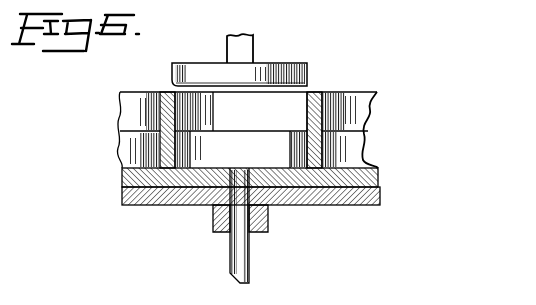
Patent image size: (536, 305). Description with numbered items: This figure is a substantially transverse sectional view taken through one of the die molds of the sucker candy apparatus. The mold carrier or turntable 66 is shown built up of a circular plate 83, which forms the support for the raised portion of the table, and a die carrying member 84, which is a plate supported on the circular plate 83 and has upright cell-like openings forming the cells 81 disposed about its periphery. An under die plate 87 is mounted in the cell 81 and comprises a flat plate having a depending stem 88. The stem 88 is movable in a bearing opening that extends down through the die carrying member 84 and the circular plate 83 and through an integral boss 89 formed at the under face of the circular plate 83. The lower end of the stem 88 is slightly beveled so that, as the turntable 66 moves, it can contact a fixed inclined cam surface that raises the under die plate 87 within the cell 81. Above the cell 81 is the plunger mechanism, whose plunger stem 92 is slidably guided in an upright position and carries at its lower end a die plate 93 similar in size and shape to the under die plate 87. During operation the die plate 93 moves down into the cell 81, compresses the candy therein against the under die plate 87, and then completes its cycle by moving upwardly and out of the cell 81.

The turntable 66 is at (119, 170).
The cell 81 is at (293, 102).
The circular plate 83 is at (381, 194).
The die carrying member 84 is at (377, 170).
The under die plate 87 is at (250, 139).
The stem 88 is at (243, 211).
The boss 89 is at (213, 218).
The plunger stem 92 is at (254, 44).
The die plate 93 is at (299, 66).